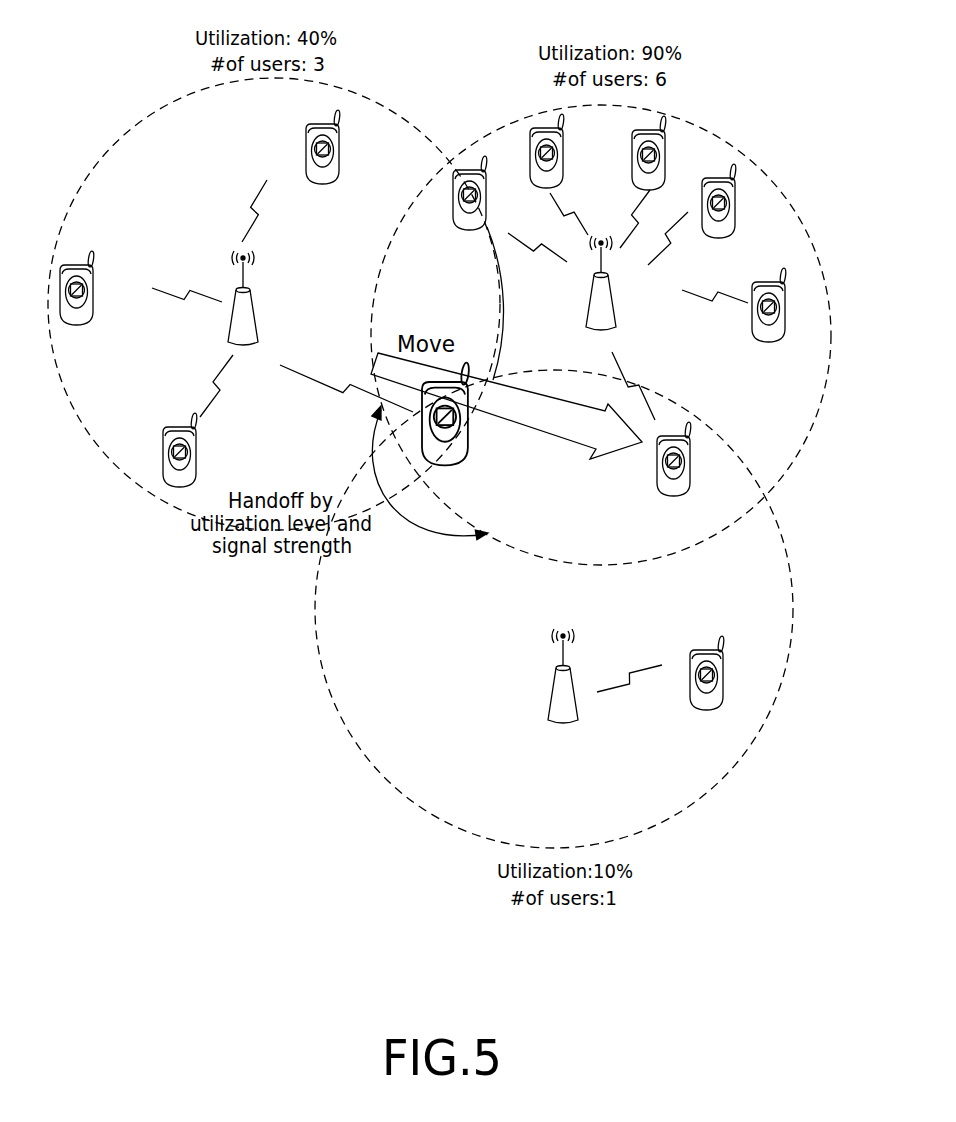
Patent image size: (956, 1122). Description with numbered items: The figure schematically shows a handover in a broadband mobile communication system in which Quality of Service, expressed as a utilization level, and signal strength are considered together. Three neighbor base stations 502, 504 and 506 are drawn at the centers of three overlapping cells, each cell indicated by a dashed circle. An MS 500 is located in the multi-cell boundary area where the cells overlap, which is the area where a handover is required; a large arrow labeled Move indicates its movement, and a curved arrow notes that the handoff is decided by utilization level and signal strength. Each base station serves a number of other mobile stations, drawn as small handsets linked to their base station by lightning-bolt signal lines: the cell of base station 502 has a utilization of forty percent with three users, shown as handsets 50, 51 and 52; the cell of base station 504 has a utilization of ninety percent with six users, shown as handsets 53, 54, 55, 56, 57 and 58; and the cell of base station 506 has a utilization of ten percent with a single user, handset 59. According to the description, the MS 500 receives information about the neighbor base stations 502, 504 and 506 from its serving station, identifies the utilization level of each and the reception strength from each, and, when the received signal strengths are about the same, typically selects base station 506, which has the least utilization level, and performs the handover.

The mobile station 50 is at (201, 450).
The mobile station 51 is at (97, 288).
The mobile station 52 is at (343, 147).
The mobile station 53 is at (490, 193).
The mobile station 54 is at (568, 151).
The mobile station 55 is at (668, 153).
The mobile station 56 is at (738, 201).
The mobile station 57 is at (789, 305).
The mobile station 58 is at (693, 459).
The mobile station 59 is at (727, 673).
The MS 500 is at (468, 462).
The base station 502 is at (258, 325).
The base station 504 is at (616, 298).
The base station 506 is at (548, 697).